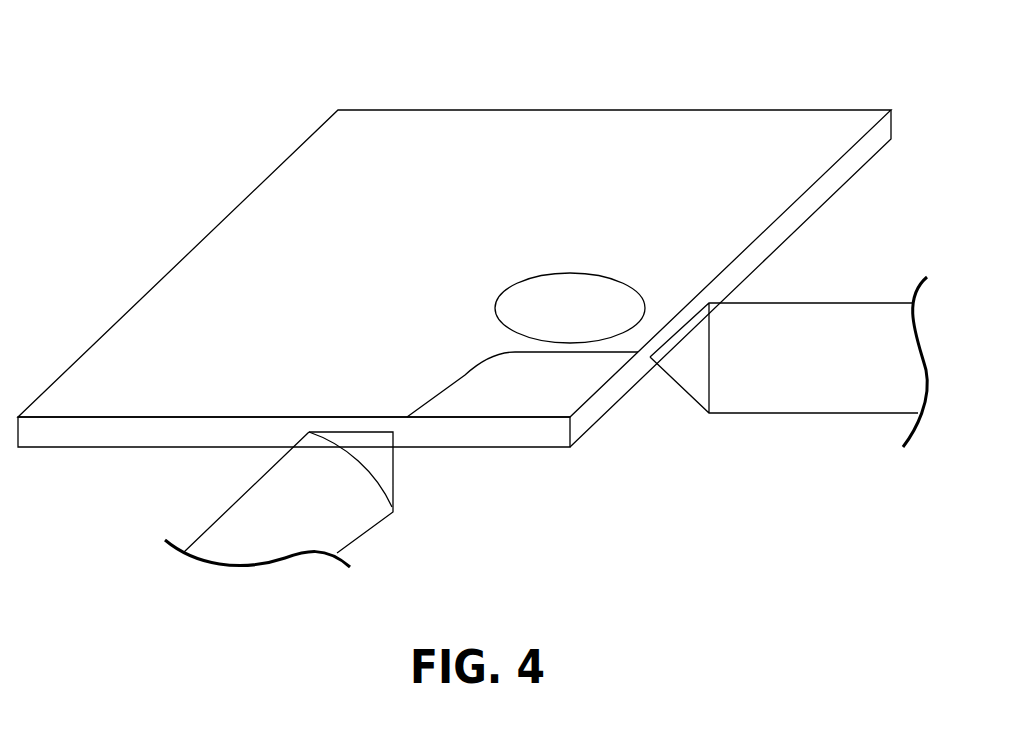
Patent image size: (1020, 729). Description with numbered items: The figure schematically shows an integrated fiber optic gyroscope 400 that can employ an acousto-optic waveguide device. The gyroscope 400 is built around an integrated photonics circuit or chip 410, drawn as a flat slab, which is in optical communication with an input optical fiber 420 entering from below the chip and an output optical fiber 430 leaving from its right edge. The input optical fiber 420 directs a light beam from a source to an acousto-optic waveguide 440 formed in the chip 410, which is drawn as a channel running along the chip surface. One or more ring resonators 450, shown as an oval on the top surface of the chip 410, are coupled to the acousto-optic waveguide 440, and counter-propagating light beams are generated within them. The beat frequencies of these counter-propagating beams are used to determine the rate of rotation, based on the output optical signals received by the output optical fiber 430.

The integrated fiber optic gyroscope 400 is at (246, 123).
The integrated photonics circuit or chip 410 is at (740, 140).
The input optical fiber 420 is at (383, 522).
The output optical fiber 430 is at (830, 303).
The acousto-optic waveguide 440 is at (415, 409).
The ring resonator 450 is at (567, 272).